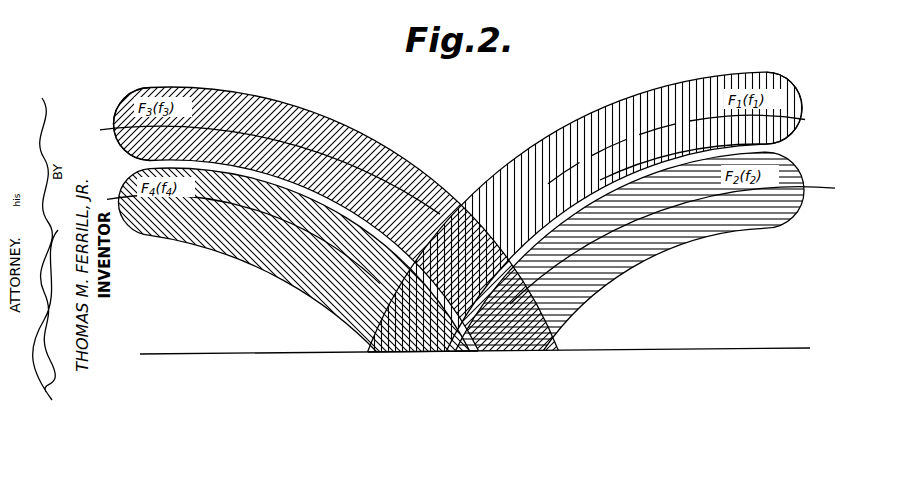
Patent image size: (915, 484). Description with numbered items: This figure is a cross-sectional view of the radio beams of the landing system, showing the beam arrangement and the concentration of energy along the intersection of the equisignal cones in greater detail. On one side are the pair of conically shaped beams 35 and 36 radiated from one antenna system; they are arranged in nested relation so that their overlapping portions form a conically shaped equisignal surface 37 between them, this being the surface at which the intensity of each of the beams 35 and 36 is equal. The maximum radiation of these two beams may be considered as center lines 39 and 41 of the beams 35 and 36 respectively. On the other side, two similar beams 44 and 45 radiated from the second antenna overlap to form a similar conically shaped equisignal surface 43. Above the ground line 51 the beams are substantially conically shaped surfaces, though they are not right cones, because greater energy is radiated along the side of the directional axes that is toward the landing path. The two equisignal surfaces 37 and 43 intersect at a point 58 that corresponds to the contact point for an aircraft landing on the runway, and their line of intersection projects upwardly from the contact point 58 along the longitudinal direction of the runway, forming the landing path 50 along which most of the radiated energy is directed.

The beam 35 is at (798, 100).
The beam 36 is at (803, 200).
The equisignal surface 37 is at (786, 143).
The center line 39 is at (806, 116).
The center line 41 is at (792, 178).
The equisignal surface 43 is at (205, 140).
The beam 44 is at (128, 93).
The beam 45 is at (115, 196).
The landing path 50 is at (436, 352).
The ground line 51 is at (698, 350).
The point 58 is at (462, 336).